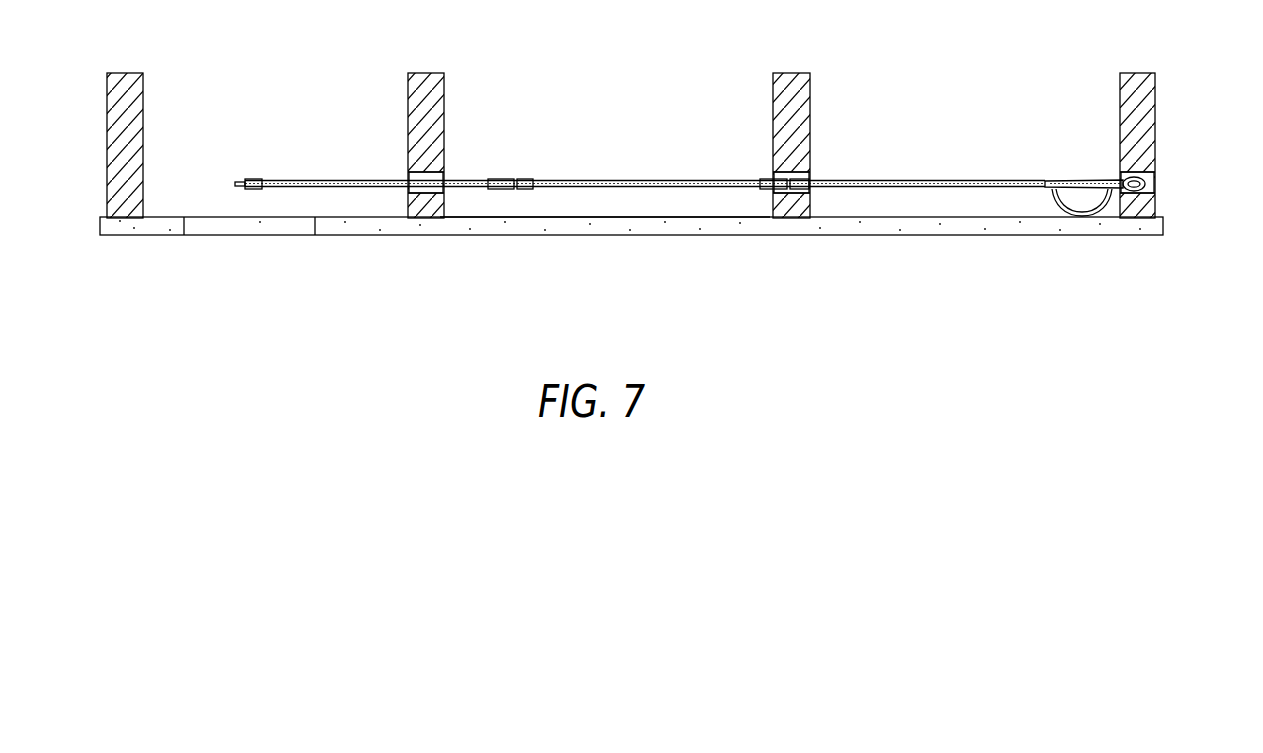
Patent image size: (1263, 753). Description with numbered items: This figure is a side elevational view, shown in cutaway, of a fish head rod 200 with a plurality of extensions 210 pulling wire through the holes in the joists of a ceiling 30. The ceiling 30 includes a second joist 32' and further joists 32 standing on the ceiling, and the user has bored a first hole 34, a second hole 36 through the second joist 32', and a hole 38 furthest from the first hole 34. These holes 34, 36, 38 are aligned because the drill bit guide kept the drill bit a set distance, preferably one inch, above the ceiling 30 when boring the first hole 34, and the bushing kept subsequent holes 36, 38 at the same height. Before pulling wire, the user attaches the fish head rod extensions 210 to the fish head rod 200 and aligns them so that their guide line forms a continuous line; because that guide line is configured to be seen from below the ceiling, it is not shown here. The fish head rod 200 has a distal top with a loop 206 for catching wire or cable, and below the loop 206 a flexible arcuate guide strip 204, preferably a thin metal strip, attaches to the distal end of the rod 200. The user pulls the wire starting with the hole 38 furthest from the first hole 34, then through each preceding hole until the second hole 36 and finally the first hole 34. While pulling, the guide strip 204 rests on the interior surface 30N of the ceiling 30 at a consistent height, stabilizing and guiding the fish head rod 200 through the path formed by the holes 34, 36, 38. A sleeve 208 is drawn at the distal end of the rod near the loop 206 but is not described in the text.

The ceiling 30 is at (673, 237).
The interior surface of the ceiling 30N is at (548, 217).
The joist 32 is at (631, 128).
The second joist 32' is at (809, 129).
The first hole 34 is at (445, 172).
The second hole 36 is at (810, 173).
The hole furthest from the first hole 38 is at (1155, 172).
The fish head rod 200 is at (732, 183).
The flexible arcuate guide strip 204 is at (1085, 217).
The loop 206 is at (1145, 184).
The ferrule sleeve 208 is at (980, 180).
The fish head rod extensions 210 is at (310, 179).